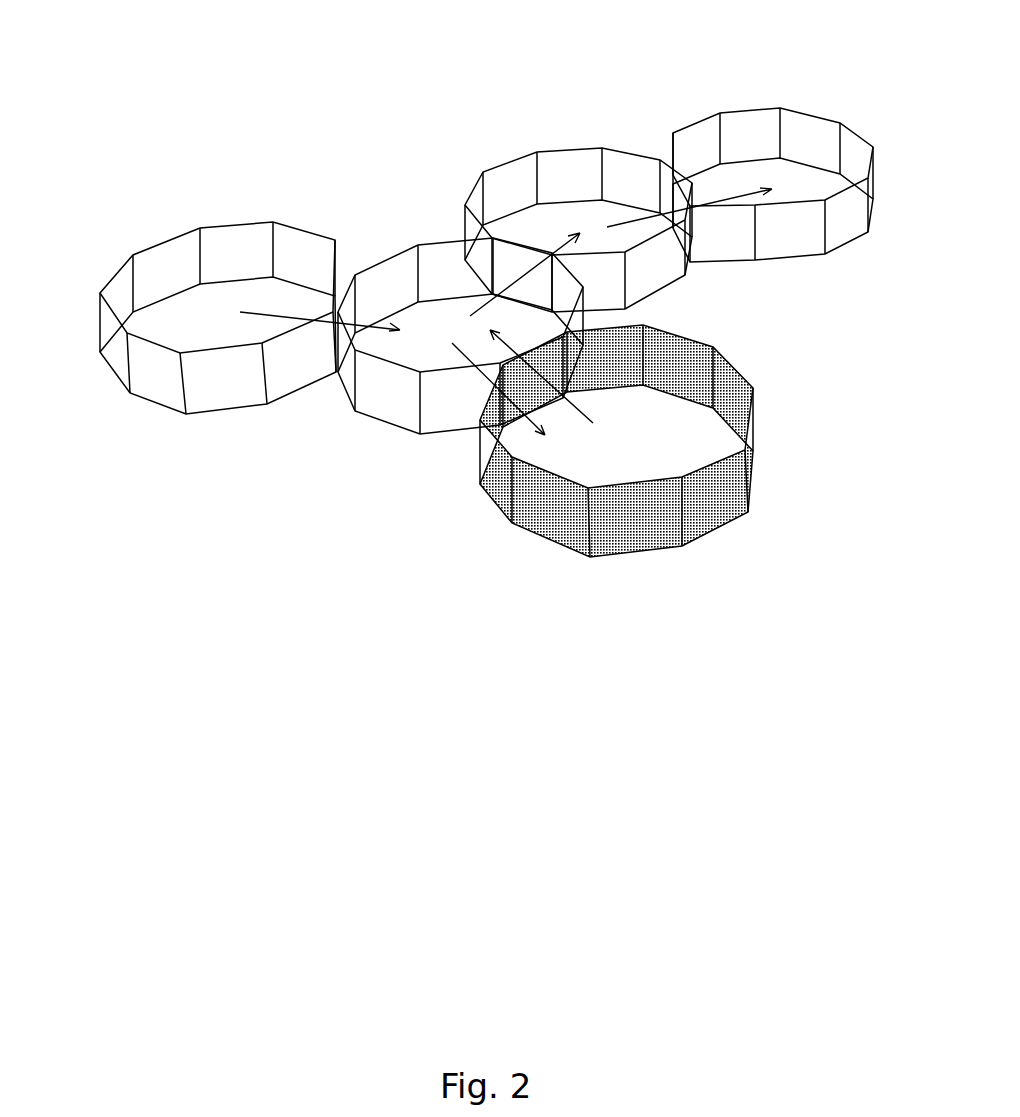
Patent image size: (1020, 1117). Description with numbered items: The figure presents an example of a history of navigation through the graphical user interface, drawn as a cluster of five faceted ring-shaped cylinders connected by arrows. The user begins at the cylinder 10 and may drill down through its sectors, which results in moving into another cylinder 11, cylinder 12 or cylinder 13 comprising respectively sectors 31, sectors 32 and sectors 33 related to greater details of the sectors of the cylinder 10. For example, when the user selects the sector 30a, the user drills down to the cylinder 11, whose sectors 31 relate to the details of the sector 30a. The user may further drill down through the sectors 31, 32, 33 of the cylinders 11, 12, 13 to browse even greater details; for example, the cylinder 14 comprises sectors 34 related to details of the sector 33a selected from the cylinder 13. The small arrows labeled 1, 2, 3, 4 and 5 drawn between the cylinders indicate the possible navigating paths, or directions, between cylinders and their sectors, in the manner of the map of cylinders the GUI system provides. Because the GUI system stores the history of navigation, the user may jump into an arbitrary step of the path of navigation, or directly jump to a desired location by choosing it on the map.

The cylinder 10 is at (357, 410).
The cylinder 11 is at (190, 415).
The cylinder 12 is at (510, 526).
The cylinder 13 is at (602, 148).
The cylinder 14 is at (782, 108).
The sector 30a is at (340, 302).
The sectors 31 is at (145, 375).
The sectors 32 is at (715, 498).
The sectors 33 is at (556, 168).
The sector 33a is at (675, 190).
The sectors 34 is at (803, 138).
The direction arrow 1 is at (320, 311).
The direction arrow 2 is at (498, 389).
The direction arrow 3 is at (541, 376).
The direction arrow 4 is at (525, 274).
The direction arrow 5 is at (689, 207).